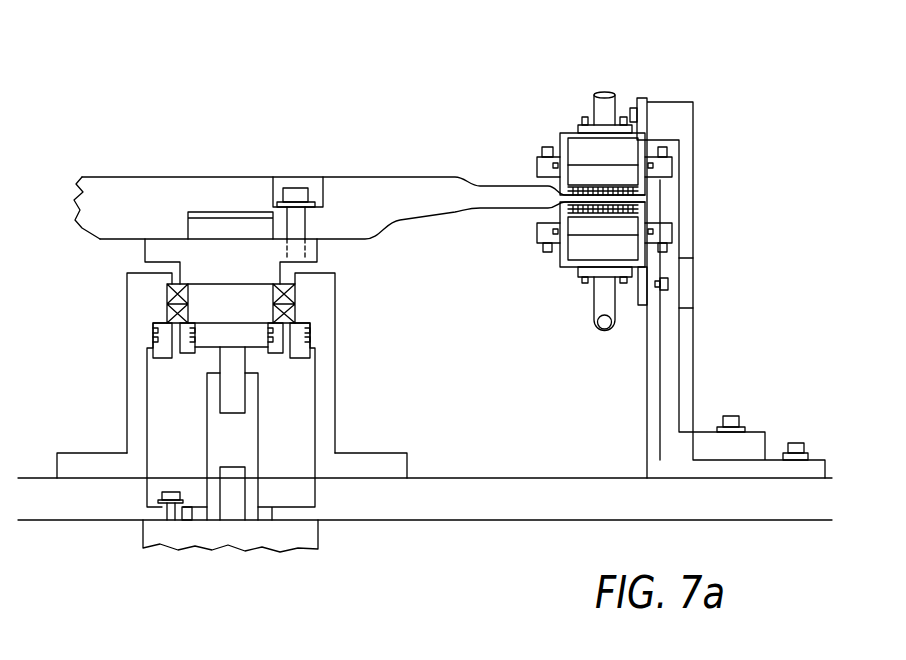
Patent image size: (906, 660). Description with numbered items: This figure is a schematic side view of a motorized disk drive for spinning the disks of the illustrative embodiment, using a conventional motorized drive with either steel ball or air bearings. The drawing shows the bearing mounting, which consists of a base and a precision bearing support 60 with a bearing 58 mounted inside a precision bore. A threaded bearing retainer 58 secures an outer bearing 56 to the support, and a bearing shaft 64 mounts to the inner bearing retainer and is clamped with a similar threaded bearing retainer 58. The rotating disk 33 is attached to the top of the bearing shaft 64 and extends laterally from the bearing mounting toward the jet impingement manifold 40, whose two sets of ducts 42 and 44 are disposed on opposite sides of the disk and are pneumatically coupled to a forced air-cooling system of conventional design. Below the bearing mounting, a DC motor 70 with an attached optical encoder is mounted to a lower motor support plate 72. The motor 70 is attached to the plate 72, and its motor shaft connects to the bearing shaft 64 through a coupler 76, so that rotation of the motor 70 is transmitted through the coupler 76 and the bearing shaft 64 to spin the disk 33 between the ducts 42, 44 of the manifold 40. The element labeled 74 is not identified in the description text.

The rotating disk 33 is at (102, 190).
The jet impingement manifold 40 is at (628, 100).
The ducts 42 is at (553, 137).
The ducts 44 is at (560, 279).
The outer bearing 56 is at (127, 310).
The bearing 58 is at (163, 303).
The precision bearing support 60 is at (127, 410).
The bearing shaft 64 is at (220, 405).
The DC motor 70 is at (203, 532).
The lower motor support plate 72 is at (425, 500).
The lower shaft 74 is at (233, 490).
The coupler 76 is at (233, 443).